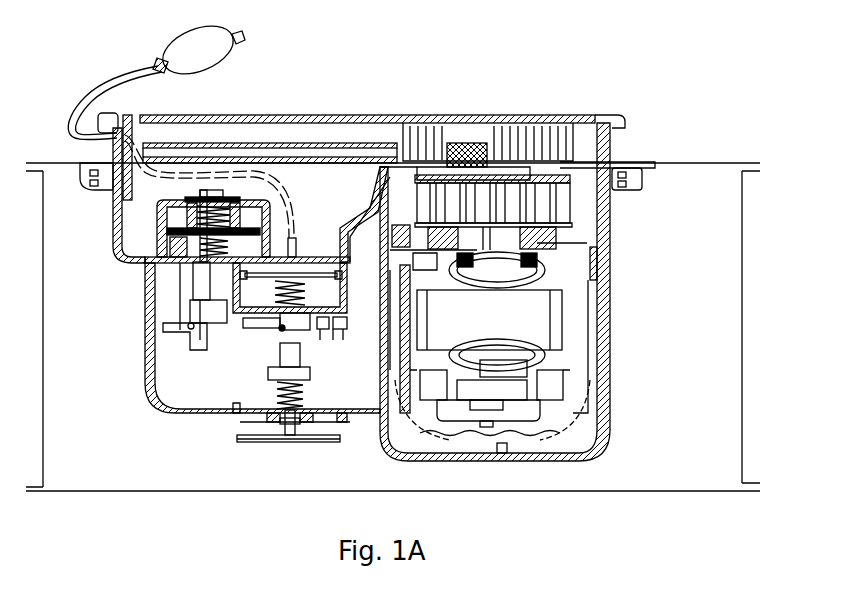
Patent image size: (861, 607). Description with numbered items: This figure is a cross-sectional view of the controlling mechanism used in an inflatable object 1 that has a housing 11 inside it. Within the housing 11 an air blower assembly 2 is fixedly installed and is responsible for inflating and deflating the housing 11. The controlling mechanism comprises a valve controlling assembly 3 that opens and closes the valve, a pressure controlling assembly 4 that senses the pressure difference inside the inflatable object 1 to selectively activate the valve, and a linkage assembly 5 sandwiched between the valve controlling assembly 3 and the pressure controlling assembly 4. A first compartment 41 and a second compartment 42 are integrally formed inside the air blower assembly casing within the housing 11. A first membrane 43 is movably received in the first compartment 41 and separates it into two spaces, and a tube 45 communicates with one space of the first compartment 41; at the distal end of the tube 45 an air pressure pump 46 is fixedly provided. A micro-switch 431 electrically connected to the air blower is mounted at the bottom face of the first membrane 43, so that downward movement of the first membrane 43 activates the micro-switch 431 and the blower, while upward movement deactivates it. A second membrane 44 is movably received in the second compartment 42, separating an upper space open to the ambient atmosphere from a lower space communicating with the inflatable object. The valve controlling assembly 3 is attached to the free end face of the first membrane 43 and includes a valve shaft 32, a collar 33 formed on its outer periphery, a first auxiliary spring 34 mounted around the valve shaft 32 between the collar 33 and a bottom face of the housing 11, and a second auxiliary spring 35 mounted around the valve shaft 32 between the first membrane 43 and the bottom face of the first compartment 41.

The inflatable object 1 is at (727, 277).
The housing 11 is at (722, 185).
The air blower assembly 2 is at (570, 213).
The valve controlling assembly 3 is at (265, 444).
The valve shaft 32 is at (287, 421).
The collar 33 is at (272, 376).
The first auxiliary spring 34 is at (275, 400).
The second auxiliary spring 35 is at (285, 308).
The pressure controlling assembly 4 is at (262, 255).
The first compartment 41 is at (347, 289).
The second compartment 42 is at (165, 208).
The first membrane 43 is at (297, 272).
The second membrane 44 is at (243, 225).
The tube 45 is at (110, 82).
The air pressure pump 46 is at (205, 52).
The micro-switch 431 is at (333, 336).
The linkage assembly 5 is at (213, 279).